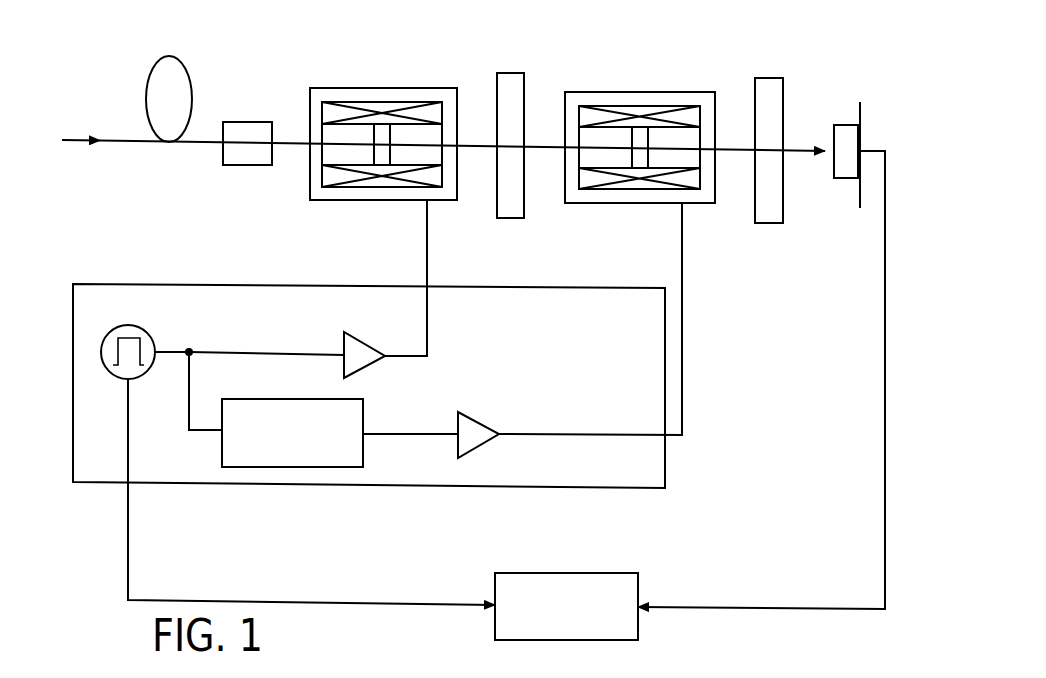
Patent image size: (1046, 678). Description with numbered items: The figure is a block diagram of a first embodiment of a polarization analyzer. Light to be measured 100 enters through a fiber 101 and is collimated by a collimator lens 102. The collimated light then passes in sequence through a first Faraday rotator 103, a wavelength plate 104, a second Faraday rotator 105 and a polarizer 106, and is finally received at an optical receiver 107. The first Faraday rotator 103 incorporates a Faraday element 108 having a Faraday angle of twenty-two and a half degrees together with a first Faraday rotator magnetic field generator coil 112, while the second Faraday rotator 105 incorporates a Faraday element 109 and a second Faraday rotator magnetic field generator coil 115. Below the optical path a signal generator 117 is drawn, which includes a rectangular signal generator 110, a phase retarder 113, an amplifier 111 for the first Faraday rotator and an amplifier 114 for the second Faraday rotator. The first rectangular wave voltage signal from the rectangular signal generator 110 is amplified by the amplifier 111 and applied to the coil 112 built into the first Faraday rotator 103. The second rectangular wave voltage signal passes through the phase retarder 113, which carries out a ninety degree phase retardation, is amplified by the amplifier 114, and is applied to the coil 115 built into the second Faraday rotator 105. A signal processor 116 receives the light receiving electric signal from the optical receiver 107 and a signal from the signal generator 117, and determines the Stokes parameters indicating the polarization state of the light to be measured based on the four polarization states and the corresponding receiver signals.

The light to be measured 100 is at (84, 138).
The fiber 101 is at (167, 56).
The collimator lens 102 is at (250, 122).
The first Faraday rotator 103 is at (383, 88).
The wavelength plate 104 is at (510, 73).
The second Faraday rotator 105 is at (640, 92).
The polarizer 106 is at (768, 78).
The optical receiver 107 is at (837, 124).
The Faraday element for first Faraday rotator 108 is at (372, 150).
The Faraday element for second Faraday rotator 109 is at (630, 152).
The rectangular signal generator 110 is at (155, 342).
The amplifier for first Faraday rotator 111 is at (368, 342).
The first Faraday rotator magnetic field generator coil 112 is at (396, 187).
The phase retarder 113 is at (364, 418).
The amplifier for second Faraday rotator 114 is at (478, 418).
The second Faraday rotator magnetic field generator coil 115 is at (653, 189).
The signal processor 116 is at (565, 572).
The signal generator 117 is at (433, 486).